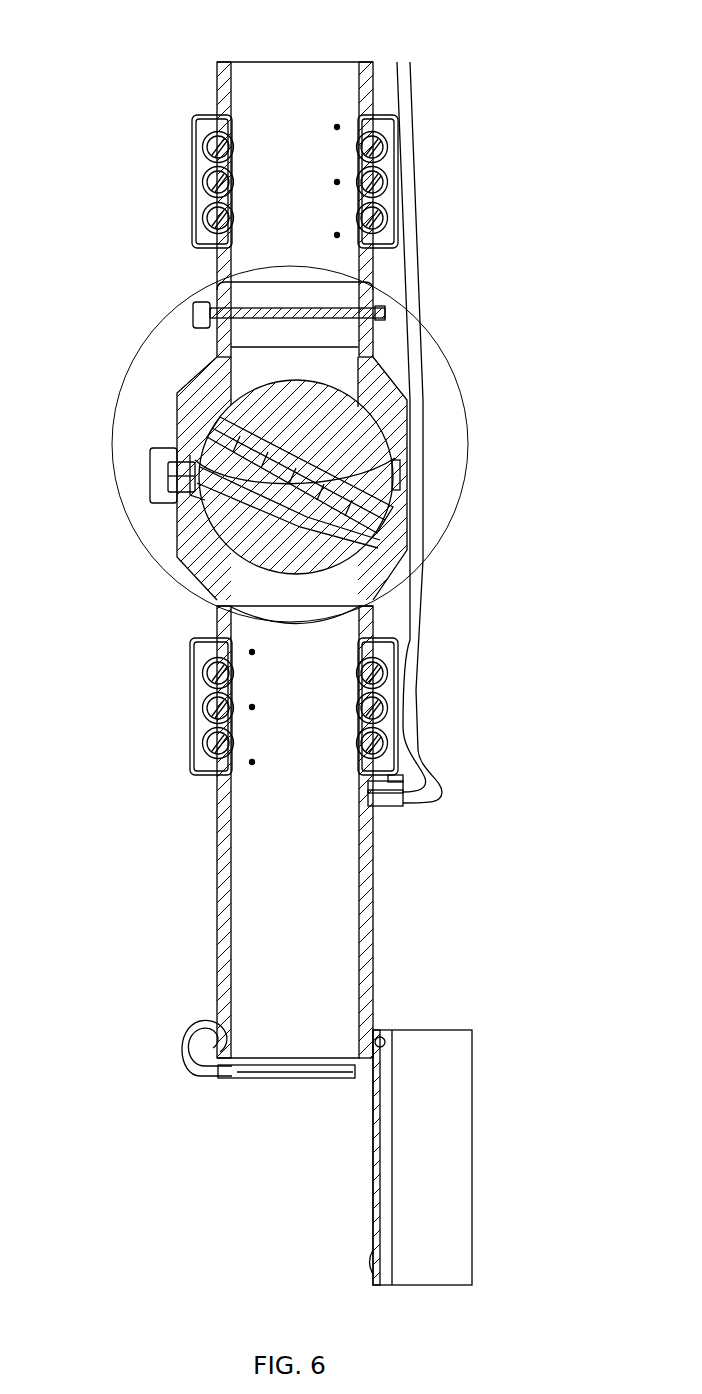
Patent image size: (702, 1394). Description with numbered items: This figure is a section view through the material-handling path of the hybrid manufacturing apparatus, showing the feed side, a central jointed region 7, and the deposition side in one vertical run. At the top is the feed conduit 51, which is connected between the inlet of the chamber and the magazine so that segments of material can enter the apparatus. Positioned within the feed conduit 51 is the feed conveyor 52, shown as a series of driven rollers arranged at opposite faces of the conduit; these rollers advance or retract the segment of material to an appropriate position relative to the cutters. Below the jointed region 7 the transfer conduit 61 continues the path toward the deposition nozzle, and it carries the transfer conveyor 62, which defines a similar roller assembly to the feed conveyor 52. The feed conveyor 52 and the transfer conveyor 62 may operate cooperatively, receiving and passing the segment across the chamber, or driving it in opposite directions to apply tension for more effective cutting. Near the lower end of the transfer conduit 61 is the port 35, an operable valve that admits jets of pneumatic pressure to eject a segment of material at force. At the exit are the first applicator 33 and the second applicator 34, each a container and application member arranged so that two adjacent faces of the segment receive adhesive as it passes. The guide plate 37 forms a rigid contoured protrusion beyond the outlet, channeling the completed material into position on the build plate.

The ball joint 7 is at (161, 326).
The feed conduit 51 is at (277, 82).
The feed conveyor 52 is at (190, 188).
The transfer conduit 61 is at (282, 794).
The transfer conveyor 62 is at (192, 723).
The port 35 is at (370, 806).
The second applicator 34 is at (198, 1067).
The first applicator 33 is at (238, 1080).
The guide plate 37 is at (443, 1130).